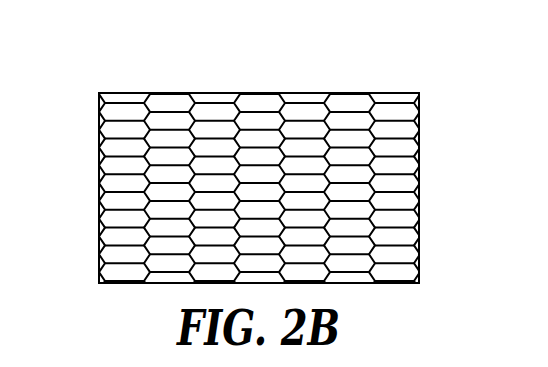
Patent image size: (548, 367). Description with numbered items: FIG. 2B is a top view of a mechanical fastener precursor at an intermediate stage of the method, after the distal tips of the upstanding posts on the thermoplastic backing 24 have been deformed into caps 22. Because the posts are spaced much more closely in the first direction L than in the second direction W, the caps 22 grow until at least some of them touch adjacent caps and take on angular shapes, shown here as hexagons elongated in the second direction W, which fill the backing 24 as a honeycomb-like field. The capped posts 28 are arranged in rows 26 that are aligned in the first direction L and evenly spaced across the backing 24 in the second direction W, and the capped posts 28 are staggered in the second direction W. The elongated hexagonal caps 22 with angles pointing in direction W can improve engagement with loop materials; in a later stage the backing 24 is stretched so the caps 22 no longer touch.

The caps 22 is at (108, 143).
The thermoplastic backing 24 is at (420, 232).
The rows 26 is at (392, 93).
The capped posts 28 is at (419, 255).
The first direction L is at (83, 282).
The second direction W is at (151, 300).